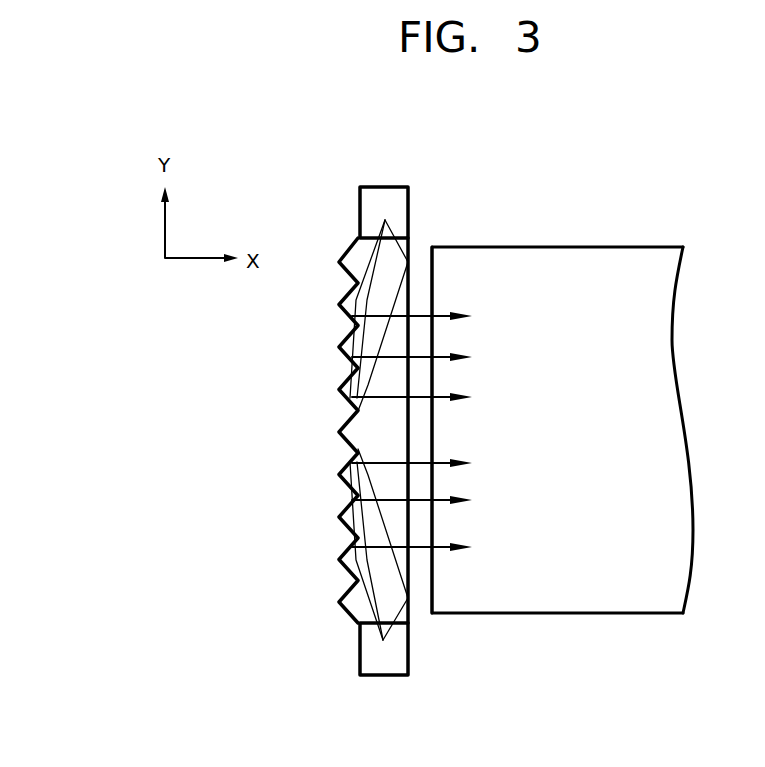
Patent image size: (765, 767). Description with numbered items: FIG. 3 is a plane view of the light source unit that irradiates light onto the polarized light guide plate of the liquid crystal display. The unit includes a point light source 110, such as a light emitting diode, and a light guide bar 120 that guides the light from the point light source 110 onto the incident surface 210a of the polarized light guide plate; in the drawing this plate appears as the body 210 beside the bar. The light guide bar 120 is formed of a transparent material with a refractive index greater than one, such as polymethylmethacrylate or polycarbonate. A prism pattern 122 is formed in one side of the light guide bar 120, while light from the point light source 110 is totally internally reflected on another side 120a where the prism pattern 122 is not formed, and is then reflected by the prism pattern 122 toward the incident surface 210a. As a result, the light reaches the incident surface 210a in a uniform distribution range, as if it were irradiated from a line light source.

The point light source 110 is at (382, 192).
The light guide bar 120 is at (374, 452).
The prism pattern 122 is at (342, 445).
The another side of the light guide bar 120a is at (410, 570).
The display panel 210 is at (560, 393).
The incident surface 210a is at (431, 270).